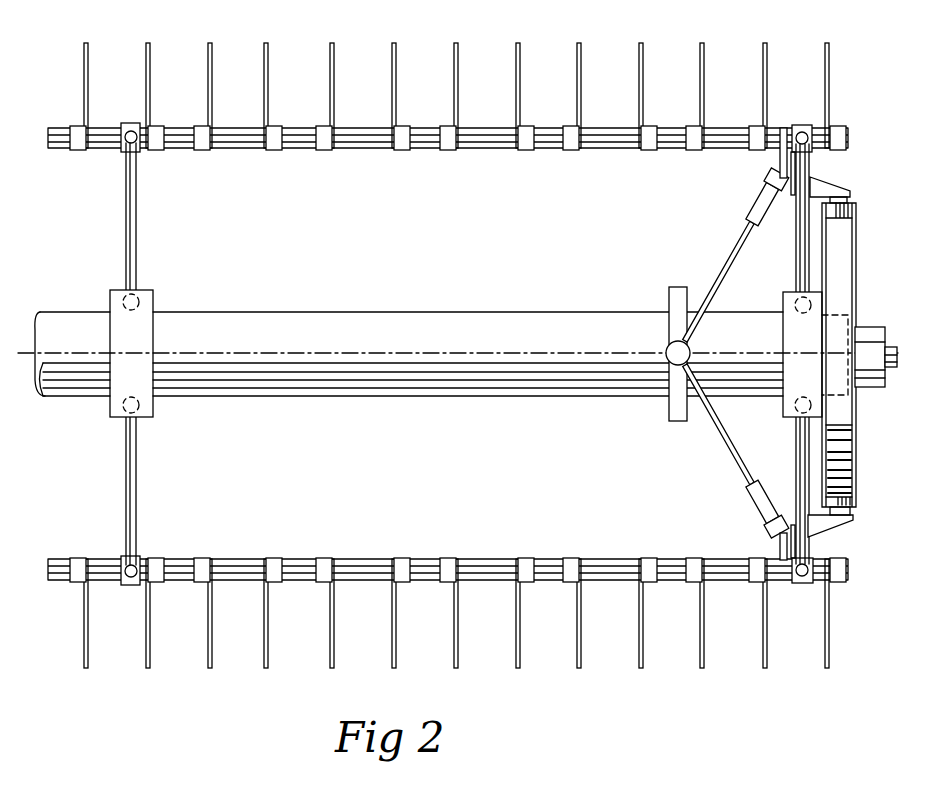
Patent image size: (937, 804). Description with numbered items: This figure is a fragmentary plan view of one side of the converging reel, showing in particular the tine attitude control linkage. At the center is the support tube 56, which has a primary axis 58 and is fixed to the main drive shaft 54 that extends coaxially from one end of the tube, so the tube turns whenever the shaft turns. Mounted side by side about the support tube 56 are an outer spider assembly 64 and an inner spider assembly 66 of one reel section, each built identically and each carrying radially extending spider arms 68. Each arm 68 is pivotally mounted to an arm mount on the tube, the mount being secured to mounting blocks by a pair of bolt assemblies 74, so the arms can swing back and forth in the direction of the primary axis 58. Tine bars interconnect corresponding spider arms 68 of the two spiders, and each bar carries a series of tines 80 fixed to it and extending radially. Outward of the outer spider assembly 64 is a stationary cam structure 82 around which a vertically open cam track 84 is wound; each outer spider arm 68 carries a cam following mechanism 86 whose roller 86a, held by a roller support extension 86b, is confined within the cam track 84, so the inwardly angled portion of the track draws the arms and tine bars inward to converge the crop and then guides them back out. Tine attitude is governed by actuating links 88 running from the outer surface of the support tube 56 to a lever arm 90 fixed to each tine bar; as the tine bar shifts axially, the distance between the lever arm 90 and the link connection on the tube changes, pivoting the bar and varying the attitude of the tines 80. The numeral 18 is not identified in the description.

The roller assembly 18 is at (30, 352).
The main drive shaft 54 is at (895, 366).
The support tube 56 is at (372, 400).
The primary axis 58 is at (895, 350).
The outer spider assembly 64 is at (784, 259).
The inner spider assembly 66 is at (155, 242).
The spider arm 68 is at (138, 199).
The bolt assemblies 74 is at (0, 458).
The tines 80 is at (458, 44).
The cam structure 82 is at (862, 257).
The cam track 84 is at (845, 292).
The cam following mechanism 86 is at (852, 117).
The roller 86a is at (845, 215).
The roller support extension 86b is at (852, 190).
The actuating links 88 is at (745, 244).
The lever arm 90 is at (781, 128).